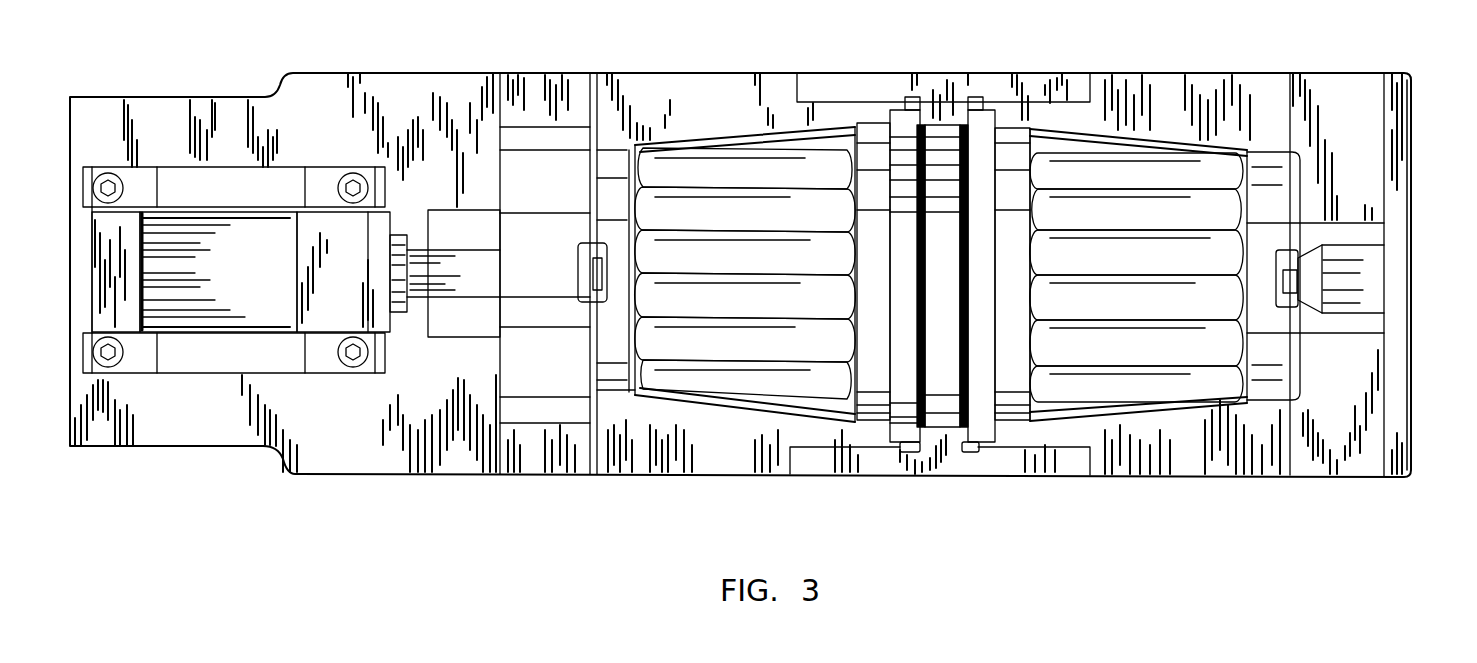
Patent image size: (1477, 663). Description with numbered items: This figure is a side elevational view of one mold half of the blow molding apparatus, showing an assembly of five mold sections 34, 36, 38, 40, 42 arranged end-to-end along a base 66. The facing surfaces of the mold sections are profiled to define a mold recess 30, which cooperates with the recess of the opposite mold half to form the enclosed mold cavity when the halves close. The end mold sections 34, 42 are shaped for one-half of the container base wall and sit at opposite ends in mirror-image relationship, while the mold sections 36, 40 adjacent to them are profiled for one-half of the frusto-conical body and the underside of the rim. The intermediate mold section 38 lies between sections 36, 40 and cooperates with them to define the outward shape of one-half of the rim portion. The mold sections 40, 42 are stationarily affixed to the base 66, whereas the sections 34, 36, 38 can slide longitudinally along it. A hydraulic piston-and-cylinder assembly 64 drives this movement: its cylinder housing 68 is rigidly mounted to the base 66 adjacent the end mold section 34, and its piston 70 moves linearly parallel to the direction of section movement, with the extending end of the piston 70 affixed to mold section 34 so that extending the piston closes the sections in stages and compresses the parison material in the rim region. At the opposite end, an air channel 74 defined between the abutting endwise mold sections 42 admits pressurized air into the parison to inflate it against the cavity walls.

The mold recess 30 is at (808, 202).
The mold section 34 is at (540, 452).
The mold section 36 is at (700, 452).
The intermediate mold section 38 is at (952, 463).
The mold section 40 is at (1168, 462).
The mold section 42 is at (1305, 462).
The hydraulic piston-and-cylinder assembly 64 is at (227, 303).
The base 66 is at (318, 88).
The cylinder housing 68 is at (268, 282).
The piston 70 is at (470, 272).
The air channel 74 is at (1368, 284).